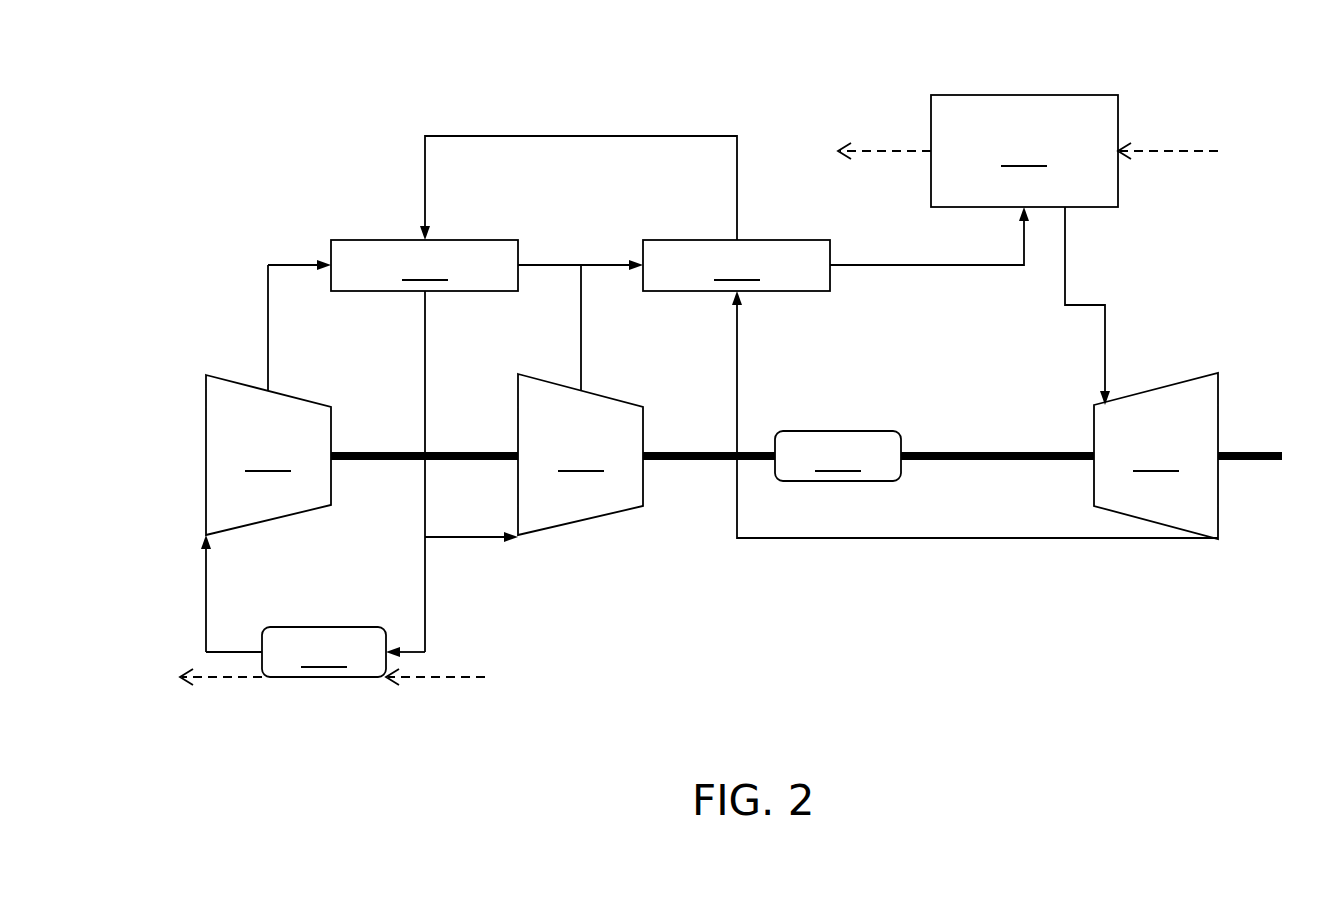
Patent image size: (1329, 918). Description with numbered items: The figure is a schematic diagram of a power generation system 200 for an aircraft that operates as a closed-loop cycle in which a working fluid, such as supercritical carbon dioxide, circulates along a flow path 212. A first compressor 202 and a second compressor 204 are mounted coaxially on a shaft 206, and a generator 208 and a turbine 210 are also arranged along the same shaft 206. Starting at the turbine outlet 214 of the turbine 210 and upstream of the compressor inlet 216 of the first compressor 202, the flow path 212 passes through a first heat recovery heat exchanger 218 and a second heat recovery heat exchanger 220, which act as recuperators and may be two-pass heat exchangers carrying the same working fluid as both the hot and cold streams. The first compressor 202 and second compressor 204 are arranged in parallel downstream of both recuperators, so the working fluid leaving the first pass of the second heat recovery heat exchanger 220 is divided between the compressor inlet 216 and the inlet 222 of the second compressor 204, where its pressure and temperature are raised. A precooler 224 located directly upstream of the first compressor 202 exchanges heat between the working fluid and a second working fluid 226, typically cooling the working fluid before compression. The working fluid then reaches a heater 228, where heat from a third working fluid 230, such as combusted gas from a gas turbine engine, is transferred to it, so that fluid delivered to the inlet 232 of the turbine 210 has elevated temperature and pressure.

The power generation system 200 is at (298, 89).
The first compressor 202 is at (268, 397).
The second compressor 204 is at (580, 400).
The shaft 206 is at (690, 462).
The generator 208 is at (838, 456).
The turbine 210 is at (1156, 456).
The flow path 212 is at (573, 136).
The turbine outlet 214 is at (1218, 539).
The compressor inlet 216 is at (206, 535).
The first heat recovery heat exchanger 218 is at (836, 249).
The second heat recovery heat exchanger 220 is at (487, 265).
The inlet 222 is at (518, 538).
The precooler 224 is at (283, 656).
The second working fluid 226 is at (445, 676).
The heater 228 is at (978, 151).
The third working fluid 230 is at (1169, 150).
The inlet 232 is at (1094, 404).